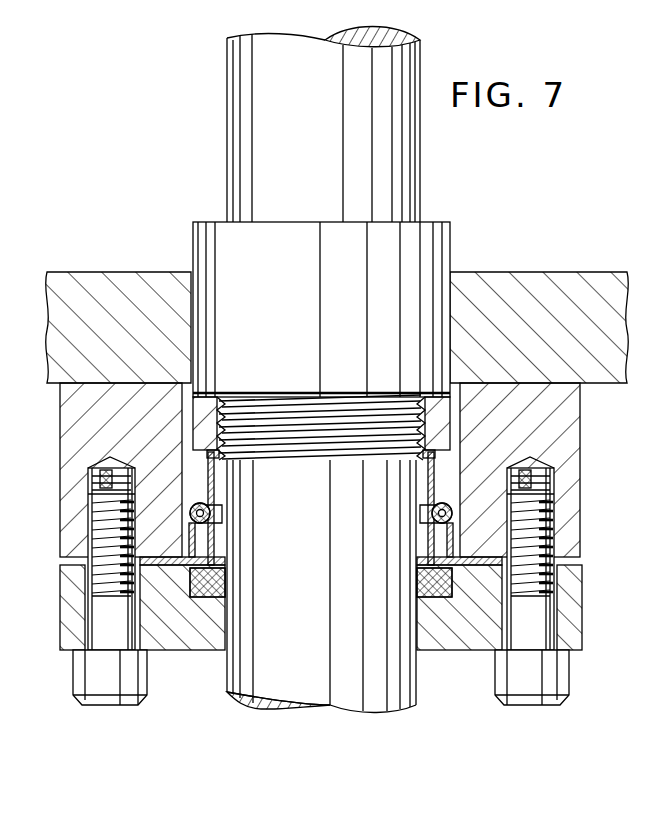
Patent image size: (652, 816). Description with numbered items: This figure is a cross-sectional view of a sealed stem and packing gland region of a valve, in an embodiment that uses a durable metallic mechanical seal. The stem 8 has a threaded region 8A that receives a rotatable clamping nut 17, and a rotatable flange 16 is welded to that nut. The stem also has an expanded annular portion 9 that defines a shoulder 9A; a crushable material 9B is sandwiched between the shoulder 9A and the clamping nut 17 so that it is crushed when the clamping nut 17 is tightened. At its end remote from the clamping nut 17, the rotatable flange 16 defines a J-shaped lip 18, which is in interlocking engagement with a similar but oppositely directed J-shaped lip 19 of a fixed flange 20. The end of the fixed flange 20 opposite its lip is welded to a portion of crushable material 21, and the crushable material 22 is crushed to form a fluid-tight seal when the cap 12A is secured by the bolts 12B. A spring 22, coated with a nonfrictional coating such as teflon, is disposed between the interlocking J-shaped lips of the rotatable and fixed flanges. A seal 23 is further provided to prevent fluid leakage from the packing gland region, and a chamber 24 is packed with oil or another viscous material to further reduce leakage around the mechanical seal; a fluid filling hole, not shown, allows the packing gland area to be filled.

The stem 8 is at (398, 193).
The threaded region 8A is at (280, 400).
The expanded annular portion 9 is at (413, 283).
The shoulder 9A is at (445, 410).
The crushable material 9B is at (457, 430).
The cap 12A is at (437, 633).
The bolts 12B is at (543, 679).
The rotatable flange 16 is at (430, 487).
The rotatable clamping nut 17 is at (545, 448).
The J-shaped lip 18 is at (452, 515).
The J-shaped lip 19 is at (205, 502).
The fixed flange 20 is at (187, 525).
The crushable material 21 is at (163, 568).
The spring 22 is at (448, 545).
The seal 23 is at (455, 588).
The chamber 24 is at (443, 477).